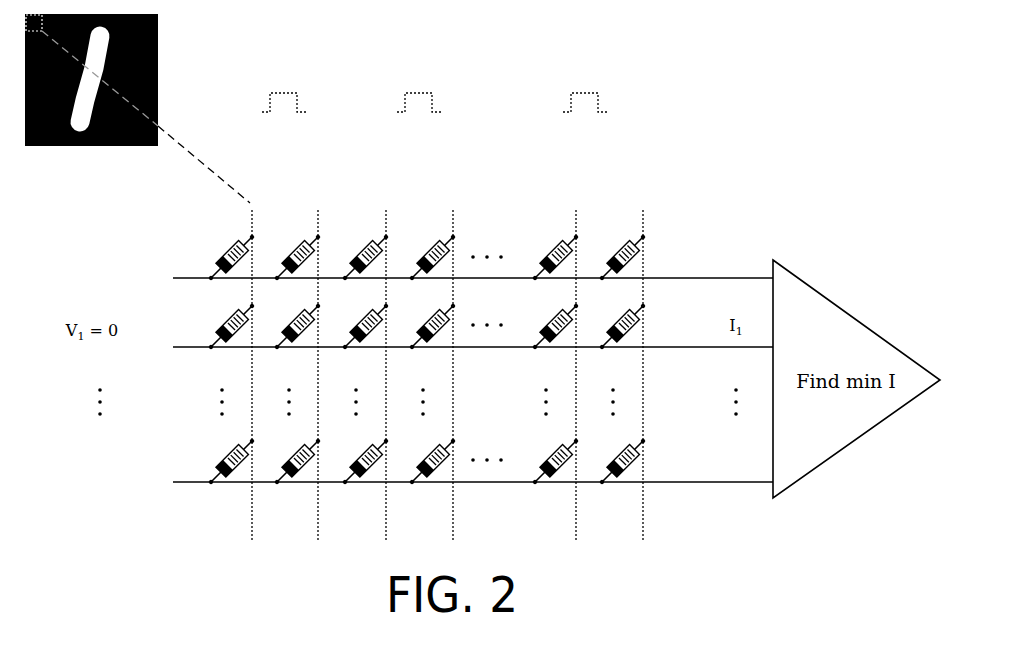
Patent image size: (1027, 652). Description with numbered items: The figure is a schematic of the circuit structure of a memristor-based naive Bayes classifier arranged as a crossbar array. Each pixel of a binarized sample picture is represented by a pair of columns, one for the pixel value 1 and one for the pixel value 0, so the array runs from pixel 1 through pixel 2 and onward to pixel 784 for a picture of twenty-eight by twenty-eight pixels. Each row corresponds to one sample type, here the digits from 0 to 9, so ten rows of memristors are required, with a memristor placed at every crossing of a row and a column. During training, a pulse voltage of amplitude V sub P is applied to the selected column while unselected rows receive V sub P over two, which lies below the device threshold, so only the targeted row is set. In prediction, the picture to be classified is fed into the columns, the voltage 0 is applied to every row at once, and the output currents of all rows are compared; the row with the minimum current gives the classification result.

The pixel 1 input column pair 1 is at (285, 305).
The pixel 2 input column pair 2 is at (419, 305).
The pixel 784 input column pair 784 is at (608, 305).
The row 0 (V0 / I0) line 0 is at (418, 259).
The row 9 (V9 / I9) line 9 is at (417, 467).